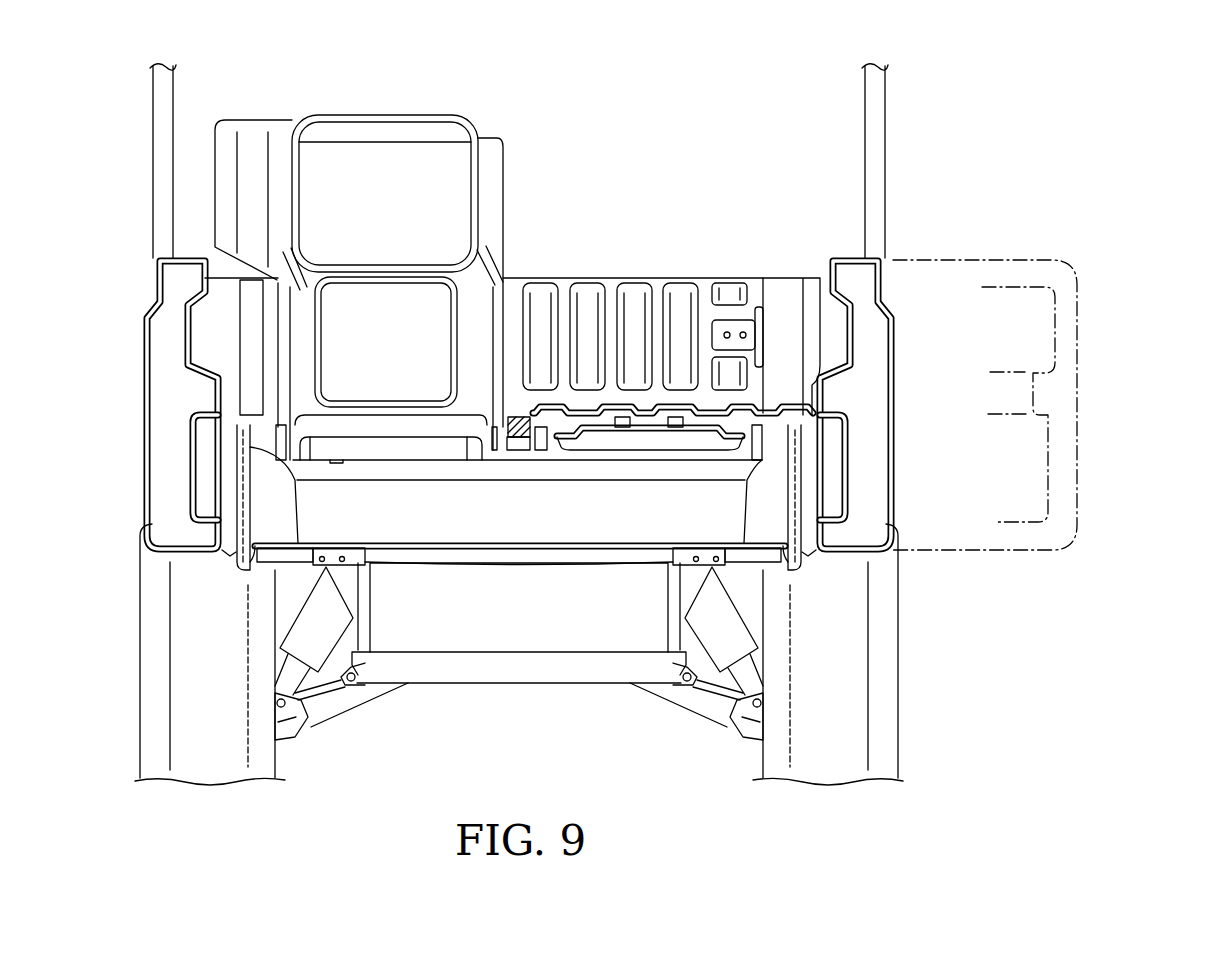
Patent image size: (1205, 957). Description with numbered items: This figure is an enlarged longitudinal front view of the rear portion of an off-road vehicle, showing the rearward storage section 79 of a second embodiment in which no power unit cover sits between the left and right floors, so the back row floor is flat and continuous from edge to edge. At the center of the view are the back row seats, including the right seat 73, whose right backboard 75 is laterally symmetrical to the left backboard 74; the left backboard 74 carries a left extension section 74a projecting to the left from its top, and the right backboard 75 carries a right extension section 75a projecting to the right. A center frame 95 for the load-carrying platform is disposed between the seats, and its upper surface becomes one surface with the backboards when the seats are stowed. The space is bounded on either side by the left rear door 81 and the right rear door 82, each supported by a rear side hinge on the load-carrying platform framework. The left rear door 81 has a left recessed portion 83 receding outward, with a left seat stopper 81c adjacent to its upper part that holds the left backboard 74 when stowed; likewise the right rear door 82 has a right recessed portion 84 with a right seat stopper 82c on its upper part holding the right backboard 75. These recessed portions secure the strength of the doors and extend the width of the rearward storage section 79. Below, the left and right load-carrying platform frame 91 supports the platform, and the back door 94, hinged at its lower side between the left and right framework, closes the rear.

The right seat 73 is at (418, 437).
The left backboard 74 is at (588, 413).
The left extension section 74a is at (815, 433).
The right backboard 75 is at (390, 128).
The right extension section 75a is at (227, 150).
The rearward storage section 79 is at (532, 526).
The left rear door 81 is at (893, 352).
The left seat stopper 81c is at (810, 400).
The right rear door 82 is at (147, 352).
The right seat stopper 82c is at (227, 397).
The left recessed portion 83 is at (840, 472).
The right recessed portion 84 is at (205, 458).
The load-carrying platform frame 91 is at (240, 500).
The back door 94 is at (683, 297).
The center frame 95 is at (517, 416).